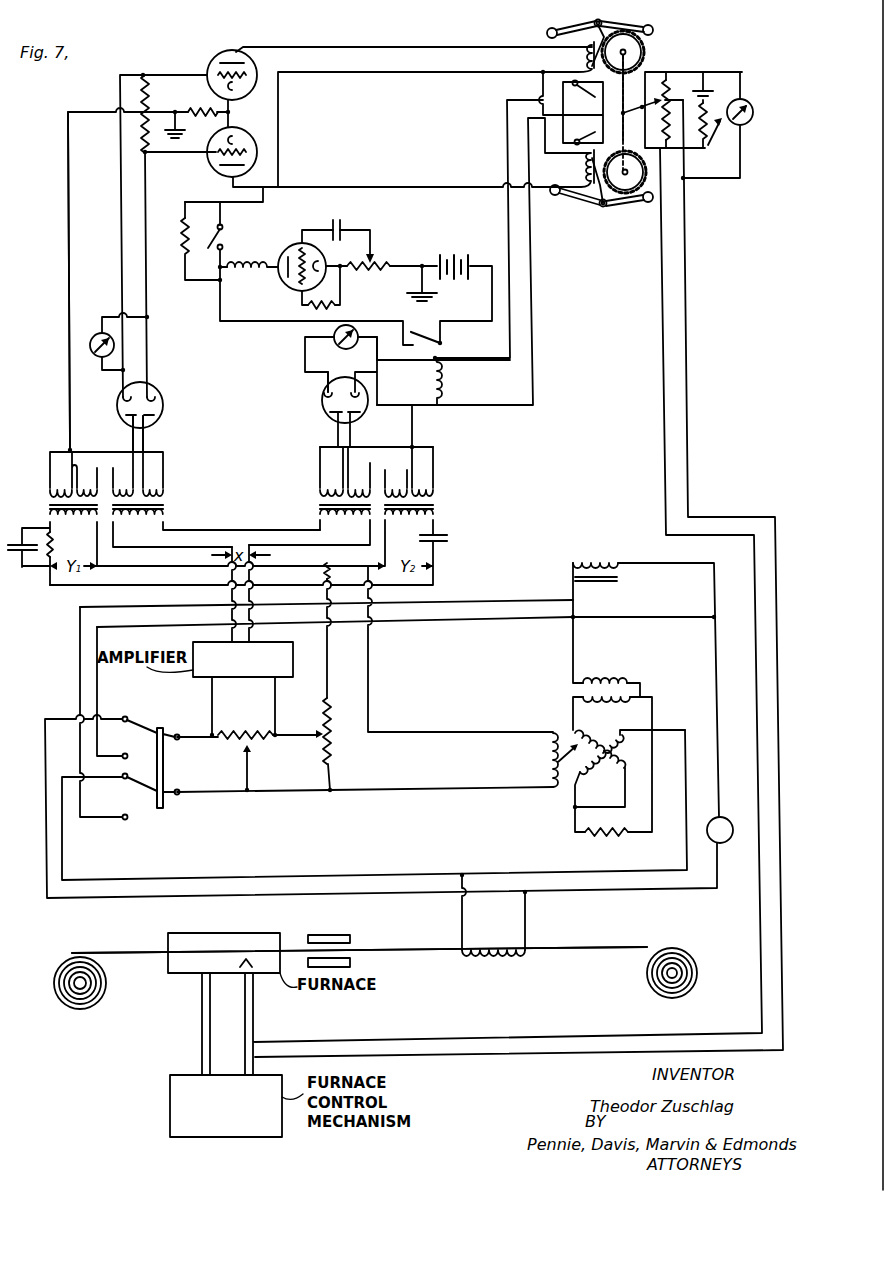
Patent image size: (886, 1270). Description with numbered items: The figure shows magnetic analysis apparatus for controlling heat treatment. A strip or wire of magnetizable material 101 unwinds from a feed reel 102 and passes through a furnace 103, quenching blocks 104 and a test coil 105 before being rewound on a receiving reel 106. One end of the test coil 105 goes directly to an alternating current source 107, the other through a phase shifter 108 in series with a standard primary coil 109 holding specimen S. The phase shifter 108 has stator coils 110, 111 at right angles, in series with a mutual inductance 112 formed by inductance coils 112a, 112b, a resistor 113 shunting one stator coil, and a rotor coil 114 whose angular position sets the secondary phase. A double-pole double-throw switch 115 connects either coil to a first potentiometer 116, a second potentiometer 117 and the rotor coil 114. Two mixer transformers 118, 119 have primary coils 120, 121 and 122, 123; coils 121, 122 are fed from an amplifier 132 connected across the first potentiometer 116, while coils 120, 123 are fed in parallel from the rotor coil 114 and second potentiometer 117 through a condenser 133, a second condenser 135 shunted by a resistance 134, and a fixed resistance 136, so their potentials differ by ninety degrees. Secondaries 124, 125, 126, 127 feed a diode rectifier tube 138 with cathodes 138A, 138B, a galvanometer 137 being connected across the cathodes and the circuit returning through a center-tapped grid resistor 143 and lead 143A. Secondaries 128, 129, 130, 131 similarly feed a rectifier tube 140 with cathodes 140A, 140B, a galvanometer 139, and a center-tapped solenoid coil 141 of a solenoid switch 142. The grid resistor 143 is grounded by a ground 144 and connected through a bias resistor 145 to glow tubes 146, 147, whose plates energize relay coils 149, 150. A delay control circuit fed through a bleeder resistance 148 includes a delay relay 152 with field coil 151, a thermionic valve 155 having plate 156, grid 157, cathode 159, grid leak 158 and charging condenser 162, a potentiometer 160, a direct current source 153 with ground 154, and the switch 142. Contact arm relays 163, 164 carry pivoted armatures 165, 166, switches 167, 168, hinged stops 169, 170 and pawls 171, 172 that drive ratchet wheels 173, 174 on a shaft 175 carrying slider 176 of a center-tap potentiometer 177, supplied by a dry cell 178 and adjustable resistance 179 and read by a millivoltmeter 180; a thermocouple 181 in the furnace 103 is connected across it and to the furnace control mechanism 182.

The strip or wire of magnetizable material 101 is at (128, 942).
The feed reel 102 is at (80, 985).
The furnace 103 is at (240, 927).
The quenching blocks 104 is at (333, 935).
The test coil 105 is at (490, 943).
The receiving reel 106 is at (670, 985).
The source of alternating current 107 is at (726, 843).
The phase shifter 108 is at (570, 787).
The standard primary coil 109 is at (605, 561).
The primary stator coil 110 is at (614, 749).
The primary stator coil 111 is at (602, 766).
The mutual inductance 112 is at (641, 684).
The inductance coil 112a is at (607, 667).
The inductance coil 112b is at (608, 712).
The resistor 113 is at (608, 846).
The rotor coil 114 is at (553, 756).
The double pole, double-throw switch 115 is at (150, 723).
The first potentiometer 116 is at (248, 730).
The second potentiometer 117 is at (336, 760).
The mixer transformer 118 is at (50, 506).
The mixer transformer 119 is at (440, 505).
The primary coil 120 is at (73, 527).
The primary coil 121 is at (138, 528).
The primary coil 122 is at (345, 526).
The primary coil 123 is at (409, 526).
The secondary coil 124 is at (55, 490).
The secondary coil 125 is at (72, 460).
The secondary coil 126 is at (117, 474).
The secondary coil 127 is at (168, 480).
The secondary coil 128 is at (322, 492).
The secondary coil 129 is at (362, 466).
The secondary coil 130 is at (398, 476).
The secondary coil 131 is at (436, 484).
The amplifier 132 is at (243, 659).
The condenser 133 is at (447, 536).
The resistance 134 is at (66, 548).
The second condenser 135 is at (20, 560).
The fixed resistance 136 is at (322, 572).
The direct current indicating means 137 is at (95, 336).
The diode thermionic rectifier tube 138 is at (162, 420).
The cathode 138A is at (163, 400).
The cathode 138B is at (123, 400).
The second direct current indicating means 139 is at (407, 358).
The diode thermionic rectifier tube 140 is at (322, 408).
The cathode 140A is at (325, 396).
The cathode 140B is at (360, 392).
The center-tapped solenoid coil 141 is at (444, 375).
The solenoid switch 142 is at (421, 327).
The center tap grid resistor 143 is at (148, 78).
The lead 143A is at (68, 255).
The ground 144 is at (179, 127).
The bias resistor 145 is at (203, 108).
The grid-controlled glow tube 146 is at (250, 57).
The grid-controlled glow tube 147 is at (209, 167).
The bleeder resistance 148 is at (180, 255).
The coil 149 is at (542, 74).
The coil 150 is at (580, 168).
The field coil 151 is at (252, 270).
The delay relay 152 is at (233, 236).
The direct current source 153 is at (465, 255).
The ground 154 is at (436, 298).
The thermionic valve 155 is at (281, 251).
The plate 156 is at (284, 288).
The grid 157 is at (283, 248).
The high resistance grid leak 158 is at (340, 306).
The cathode 159 is at (330, 262).
The potentiometer 160 is at (368, 274).
The charging condenser 162 is at (344, 229).
The contact arm relay 163 is at (593, 55).
The contact arm relay 164 is at (610, 170).
The pivoted armature 165 is at (572, 23).
The pivoted armature 166 is at (560, 196).
The relay controlled switch 167 is at (583, 100).
The relay controlled switch 168 is at (580, 132).
The hinged stop 169 is at (638, 21).
The hinged stop 170 is at (645, 204).
The pawl 171 is at (582, 54).
The pawl 172 is at (601, 208).
The ratchet wheel 173 is at (643, 50).
The ratchet wheel 174 is at (625, 191).
The rotatable shaft 175 is at (672, 80).
The slider 176 is at (639, 112).
The center-tap potentiometer 177 is at (668, 98).
The direct current source 178 is at (717, 85).
The adjustable resistance 179 is at (719, 131).
The direct potential indicating means 180 is at (754, 109).
The thermocouple 181 is at (240, 967).
The furnace control mechanism 182 is at (226, 1106).